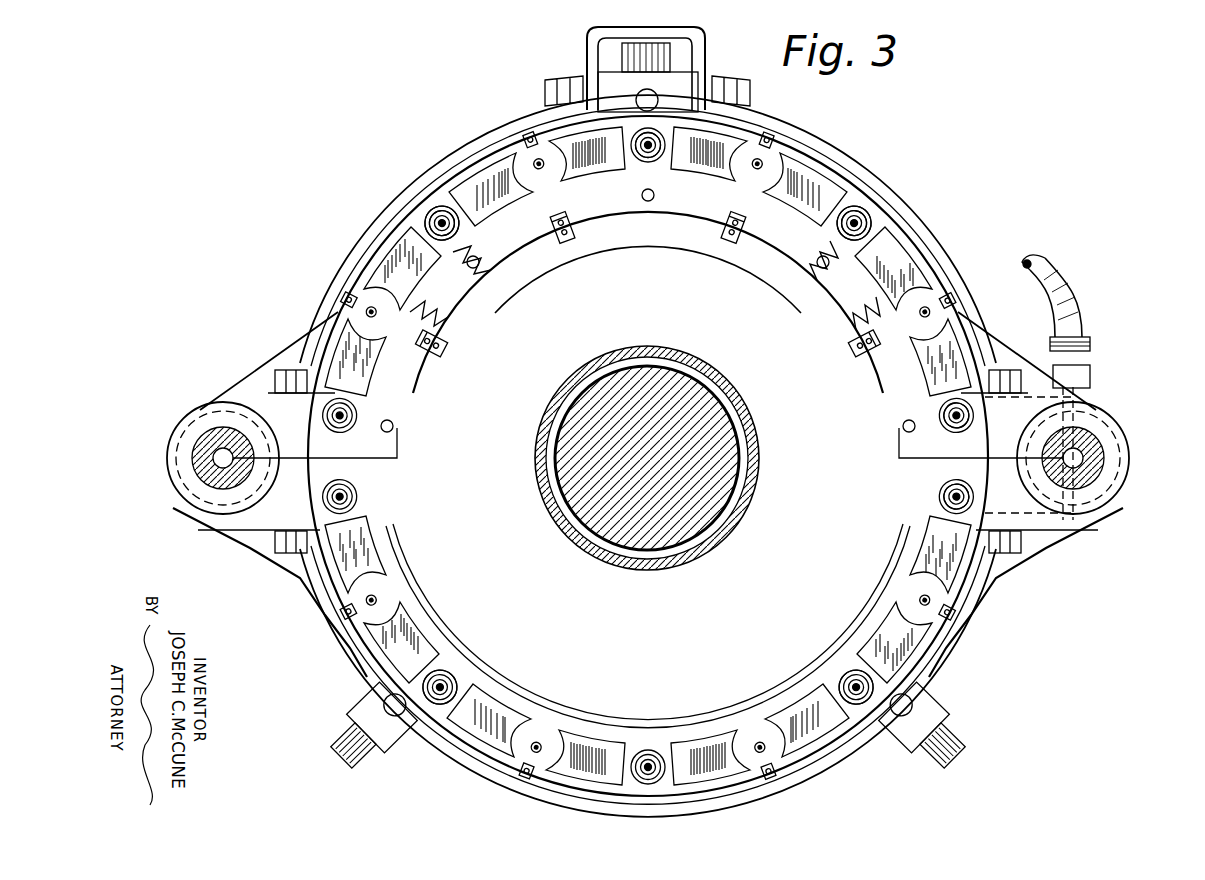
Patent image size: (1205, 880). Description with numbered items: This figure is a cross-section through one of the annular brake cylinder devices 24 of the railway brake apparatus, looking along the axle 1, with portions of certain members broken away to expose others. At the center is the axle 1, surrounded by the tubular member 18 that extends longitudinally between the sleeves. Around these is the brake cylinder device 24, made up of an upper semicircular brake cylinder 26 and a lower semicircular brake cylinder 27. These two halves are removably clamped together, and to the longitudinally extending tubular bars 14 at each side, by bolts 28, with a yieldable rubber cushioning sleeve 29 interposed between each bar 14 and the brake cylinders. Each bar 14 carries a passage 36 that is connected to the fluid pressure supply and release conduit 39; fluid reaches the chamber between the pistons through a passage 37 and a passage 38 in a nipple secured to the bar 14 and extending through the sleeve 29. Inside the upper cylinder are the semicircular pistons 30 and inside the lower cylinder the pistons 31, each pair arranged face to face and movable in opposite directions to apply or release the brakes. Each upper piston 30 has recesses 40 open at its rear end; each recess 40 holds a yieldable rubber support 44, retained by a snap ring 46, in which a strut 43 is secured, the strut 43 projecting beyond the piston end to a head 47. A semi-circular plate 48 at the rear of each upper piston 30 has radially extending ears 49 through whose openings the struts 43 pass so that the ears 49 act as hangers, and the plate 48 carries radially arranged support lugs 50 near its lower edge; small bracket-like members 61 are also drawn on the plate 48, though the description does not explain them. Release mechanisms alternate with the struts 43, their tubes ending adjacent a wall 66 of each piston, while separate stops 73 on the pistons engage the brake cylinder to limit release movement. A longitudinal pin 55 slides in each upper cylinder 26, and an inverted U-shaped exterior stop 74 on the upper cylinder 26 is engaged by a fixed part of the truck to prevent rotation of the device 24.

The axle 1 is at (720, 412).
The bar 14 is at (205, 442).
The member 18 is at (605, 352).
The brake cylinder device 24 is at (838, 162).
The upper brake cylinder 26 is at (470, 170).
The lower brake cylinder 27 is at (582, 727).
The bolt 28 is at (290, 368).
The cushioning sleeve 29 is at (205, 412).
The piston 30 is at (410, 368).
The piston 31 is at (515, 712).
The passage 36 is at (214, 458).
The passage 37 is at (1030, 508).
The passage 38 is at (1080, 480).
The fluid pressure supply and release conduit 39 is at (1075, 275).
The recess 40 is at (425, 228).
The strut 43 is at (648, 456).
The yieldable support 44 is at (667, 147).
The snap ring 46 is at (632, 140).
The head 47 is at (650, 148).
The semi-circular plate 48 is at (680, 210).
The ear 49 is at (636, 160).
The support lug 50 is at (645, 204).
The pin 55 is at (640, 96).
The bracket 61 is at (556, 228).
The wall 66 is at (762, 160).
The stop 73 is at (765, 135).
The exterior stop 74 is at (585, 50).